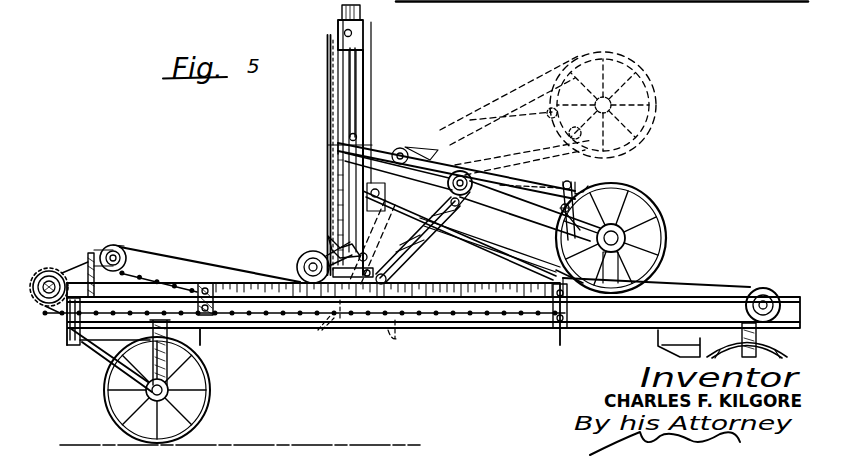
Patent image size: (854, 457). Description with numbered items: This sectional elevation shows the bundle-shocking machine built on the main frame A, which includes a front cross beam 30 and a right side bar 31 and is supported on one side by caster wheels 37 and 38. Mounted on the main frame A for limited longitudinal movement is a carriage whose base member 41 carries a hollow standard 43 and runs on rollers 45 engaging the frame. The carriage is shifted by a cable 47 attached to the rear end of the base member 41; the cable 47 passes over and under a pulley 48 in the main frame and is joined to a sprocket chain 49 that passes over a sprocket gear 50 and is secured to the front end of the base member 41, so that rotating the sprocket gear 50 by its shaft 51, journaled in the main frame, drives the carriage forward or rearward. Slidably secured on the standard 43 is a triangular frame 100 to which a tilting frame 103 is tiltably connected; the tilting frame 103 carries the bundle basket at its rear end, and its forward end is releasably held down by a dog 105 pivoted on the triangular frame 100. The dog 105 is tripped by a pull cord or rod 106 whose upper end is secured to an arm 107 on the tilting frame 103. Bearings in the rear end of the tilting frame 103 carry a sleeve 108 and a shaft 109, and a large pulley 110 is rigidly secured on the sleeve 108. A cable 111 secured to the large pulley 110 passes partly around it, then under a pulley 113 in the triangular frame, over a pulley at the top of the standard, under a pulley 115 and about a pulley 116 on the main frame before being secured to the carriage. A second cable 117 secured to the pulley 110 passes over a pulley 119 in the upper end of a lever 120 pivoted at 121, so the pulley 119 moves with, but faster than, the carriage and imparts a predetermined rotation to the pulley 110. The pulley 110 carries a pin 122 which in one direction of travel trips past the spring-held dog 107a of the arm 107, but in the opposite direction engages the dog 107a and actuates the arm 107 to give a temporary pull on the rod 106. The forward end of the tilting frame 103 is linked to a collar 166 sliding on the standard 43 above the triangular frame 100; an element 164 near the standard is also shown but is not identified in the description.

The front cross beam 30 is at (98, 257).
The right side bar 31 is at (275, 324).
The caster wheel 37 is at (212, 414).
The caster wheel 38 is at (770, 350).
The base member 41 is at (452, 300).
The hollow standard 43 is at (348, 118).
The rollers 45 is at (562, 330).
The cable 47 is at (700, 280).
The pulley 48 is at (771, 291).
The sprocket chain 49 is at (232, 318).
The sprocket gear 50 is at (41, 306).
The shaft 51 is at (52, 290).
The triangularly shaped frame 100 is at (402, 156).
The tilting frame 103 is at (511, 228).
The dog 105 is at (335, 243).
The pull cord or rod 106 is at (538, 184).
The arm 107 is at (612, 187).
The spring-held dog 107a is at (563, 210).
The sleeve 108 is at (662, 233).
The shaft 109 is at (648, 213).
The large pulley 110 is at (664, 240).
The cable 111 is at (171, 255).
The pulley 113 is at (383, 136).
The pulley 115 is at (298, 263).
The pulley 116 is at (117, 245).
The cable 117 is at (477, 248).
The pulley 119 is at (441, 216).
The lever 120 is at (328, 336).
The pivot 121 is at (322, 334).
The pin 122 is at (560, 262).
The latch 164 is at (426, 139).
The collar 166 is at (365, 41).
The main frame A is at (513, 339).